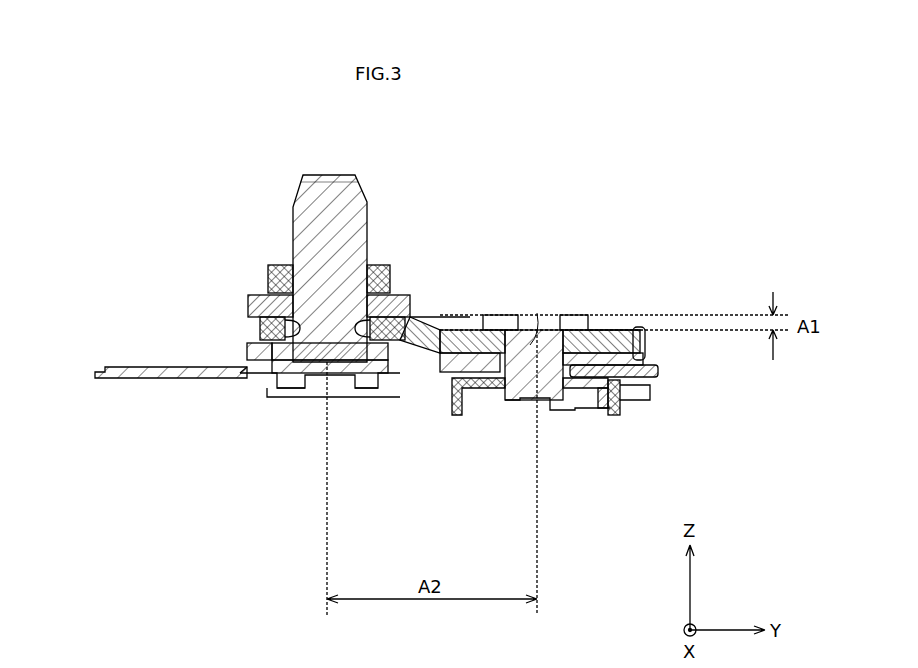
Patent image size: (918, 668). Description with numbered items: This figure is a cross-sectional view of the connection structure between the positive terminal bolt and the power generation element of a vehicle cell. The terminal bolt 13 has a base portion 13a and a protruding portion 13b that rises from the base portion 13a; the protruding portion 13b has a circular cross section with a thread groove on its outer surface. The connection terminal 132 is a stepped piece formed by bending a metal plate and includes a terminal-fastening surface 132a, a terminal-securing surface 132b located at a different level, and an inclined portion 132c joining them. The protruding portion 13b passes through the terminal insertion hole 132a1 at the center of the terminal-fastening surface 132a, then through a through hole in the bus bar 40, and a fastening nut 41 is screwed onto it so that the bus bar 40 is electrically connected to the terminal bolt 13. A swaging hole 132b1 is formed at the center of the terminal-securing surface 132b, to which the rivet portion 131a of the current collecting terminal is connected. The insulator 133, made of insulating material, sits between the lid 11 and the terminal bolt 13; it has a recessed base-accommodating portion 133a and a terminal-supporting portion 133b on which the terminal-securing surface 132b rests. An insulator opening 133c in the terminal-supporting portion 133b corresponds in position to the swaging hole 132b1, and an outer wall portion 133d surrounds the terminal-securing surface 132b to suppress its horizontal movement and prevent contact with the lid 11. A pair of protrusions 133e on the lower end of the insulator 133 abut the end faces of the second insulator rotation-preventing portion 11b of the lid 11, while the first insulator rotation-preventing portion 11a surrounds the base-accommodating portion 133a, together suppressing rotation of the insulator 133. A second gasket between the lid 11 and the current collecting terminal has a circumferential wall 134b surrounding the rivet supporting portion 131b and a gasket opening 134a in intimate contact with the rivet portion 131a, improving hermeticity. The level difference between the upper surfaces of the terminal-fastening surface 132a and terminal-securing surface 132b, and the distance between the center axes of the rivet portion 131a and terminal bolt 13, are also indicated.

The lid 11 is at (143, 381).
The first insulator rotation-preventing portion 11a is at (246, 386).
The second insulator rotation-preventing portion 11b is at (335, 398).
The terminal bolt (positive electrode) 13 is at (383, 240).
The base portion 13a is at (442, 317).
The protruding portion 13b is at (340, 247).
The bus bar 40 is at (250, 303).
The fastening nut 41 is at (268, 272).
The rivet portion 131a is at (510, 405).
The rivet supporting portion 131b is at (600, 410).
The connection terminal (positive electrode) 132 is at (470, 317).
The terminal-fastening surface 132a is at (262, 336).
The terminal insertion hole 132a1 is at (238, 382).
The terminal-securing surface 132b is at (660, 370).
The swaging hole 132b1 is at (556, 305).
The inclined portion 132c is at (440, 317).
The insulator (first gasket) 133 is at (656, 346).
The base-accommodating portion 133a is at (247, 355).
The terminal-supporting portion 133b is at (612, 326).
The insulator opening 133c is at (622, 380).
The outer wall portion 133d is at (647, 336).
The protrusions 133e is at (290, 400).
The gasket opening 134a is at (612, 400).
The circumferential wall 134b is at (618, 415).